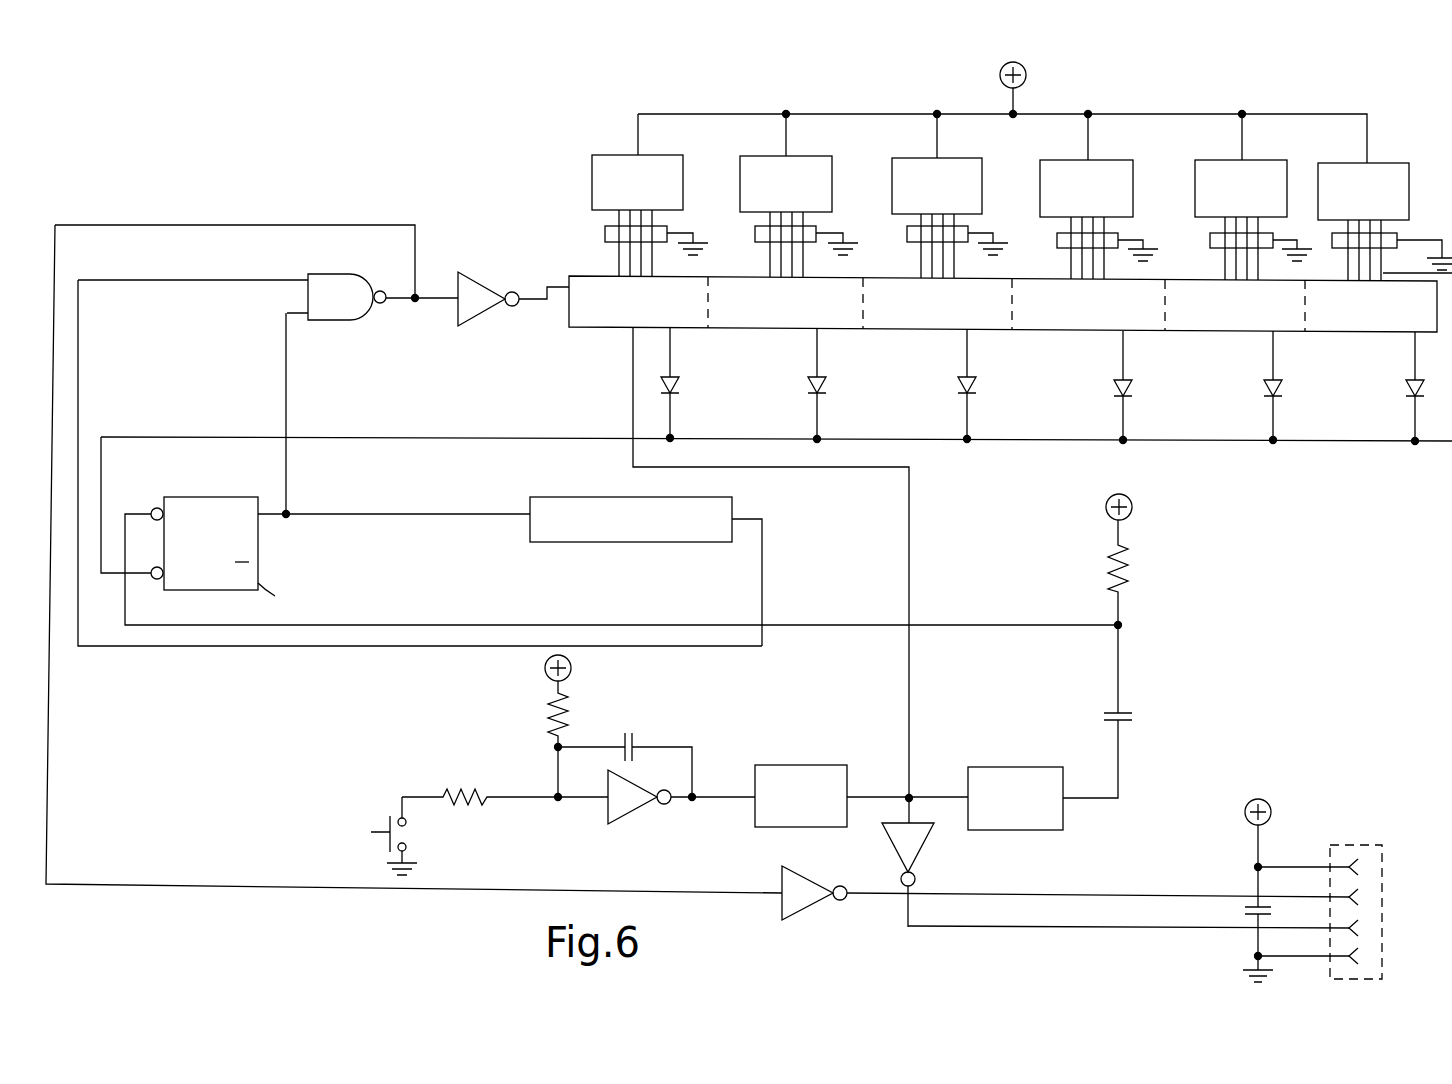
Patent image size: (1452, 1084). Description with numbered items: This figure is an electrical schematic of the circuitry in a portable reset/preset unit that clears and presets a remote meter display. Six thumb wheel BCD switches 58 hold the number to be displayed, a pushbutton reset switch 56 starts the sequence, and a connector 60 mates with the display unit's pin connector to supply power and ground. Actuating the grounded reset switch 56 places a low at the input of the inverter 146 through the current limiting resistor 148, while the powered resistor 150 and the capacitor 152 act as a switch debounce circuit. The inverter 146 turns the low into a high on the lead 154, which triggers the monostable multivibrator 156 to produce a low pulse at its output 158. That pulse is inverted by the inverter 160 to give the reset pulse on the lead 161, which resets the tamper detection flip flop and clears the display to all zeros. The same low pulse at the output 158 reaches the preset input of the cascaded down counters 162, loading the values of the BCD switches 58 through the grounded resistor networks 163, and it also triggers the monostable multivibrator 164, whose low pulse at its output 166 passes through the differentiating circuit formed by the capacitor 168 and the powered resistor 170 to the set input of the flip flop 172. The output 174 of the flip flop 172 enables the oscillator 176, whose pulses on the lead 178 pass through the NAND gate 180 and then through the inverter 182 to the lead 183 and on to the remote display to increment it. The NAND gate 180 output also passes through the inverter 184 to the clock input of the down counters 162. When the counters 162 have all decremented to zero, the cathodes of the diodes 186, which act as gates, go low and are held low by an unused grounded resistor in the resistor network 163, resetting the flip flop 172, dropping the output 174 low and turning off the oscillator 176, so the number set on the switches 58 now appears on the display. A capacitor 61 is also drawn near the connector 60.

The thumb wheel BCD switches 58 is at (742, 157).
The grounded resistor networks 163 is at (753, 229).
The cascaded down counters 162 is at (575, 276).
The diodes 186 is at (808, 389).
The NAND gate 180 is at (325, 275).
The inverter 184 is at (487, 283).
The output of the flip flop 174 is at (260, 517).
The flip flop 172 is at (285, 598).
The oscillator 176 is at (585, 497).
The lead 178 is at (763, 548).
The powered resistor 170 is at (1130, 558).
The capacitor 168 is at (1130, 713).
The monostable multivibrator 164 is at (990, 767).
The output of the monostable multivibrator 166 is at (1066, 802).
The output of the monostable multivibrator 158 is at (849, 797).
The inverter 160 is at (920, 852).
The monostable multivibrator 156 is at (786, 765).
The lead 154 is at (718, 798).
The inverter 146 is at (605, 808).
The capacitor 152 is at (638, 748).
The powered resistor 150 is at (568, 706).
The current limiting resistor 148 is at (455, 792).
The pushbutton reset switch 56 is at (380, 830).
The inverter 182 is at (818, 882).
The lead 183 is at (1060, 893).
The lead 161 is at (1012, 930).
The capacitor 61 is at (1243, 910).
The connector 60 is at (1357, 845).